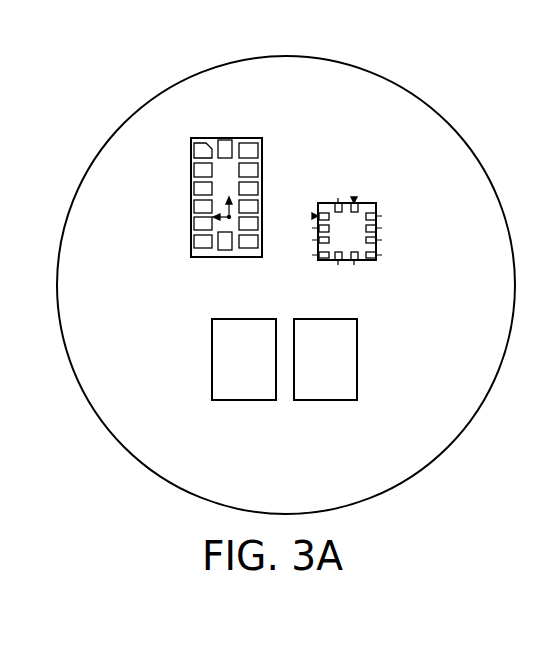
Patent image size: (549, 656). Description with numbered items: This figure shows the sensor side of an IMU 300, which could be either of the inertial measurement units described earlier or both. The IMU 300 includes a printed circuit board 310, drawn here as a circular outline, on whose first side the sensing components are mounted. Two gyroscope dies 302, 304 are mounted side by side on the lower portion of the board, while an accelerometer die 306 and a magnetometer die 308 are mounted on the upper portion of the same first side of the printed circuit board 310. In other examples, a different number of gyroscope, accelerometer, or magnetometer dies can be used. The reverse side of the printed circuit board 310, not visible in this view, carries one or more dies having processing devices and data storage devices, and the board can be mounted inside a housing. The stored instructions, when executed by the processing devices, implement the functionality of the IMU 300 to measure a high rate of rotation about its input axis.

The IMU 300 is at (86, 109).
The gyroscope die 302 is at (212, 363).
The gyroscope die 304 is at (357, 363).
The accelerometer die 306 is at (191, 218).
The magnetometer die 308 is at (376, 250).
The printed circuit board 310 is at (443, 120).